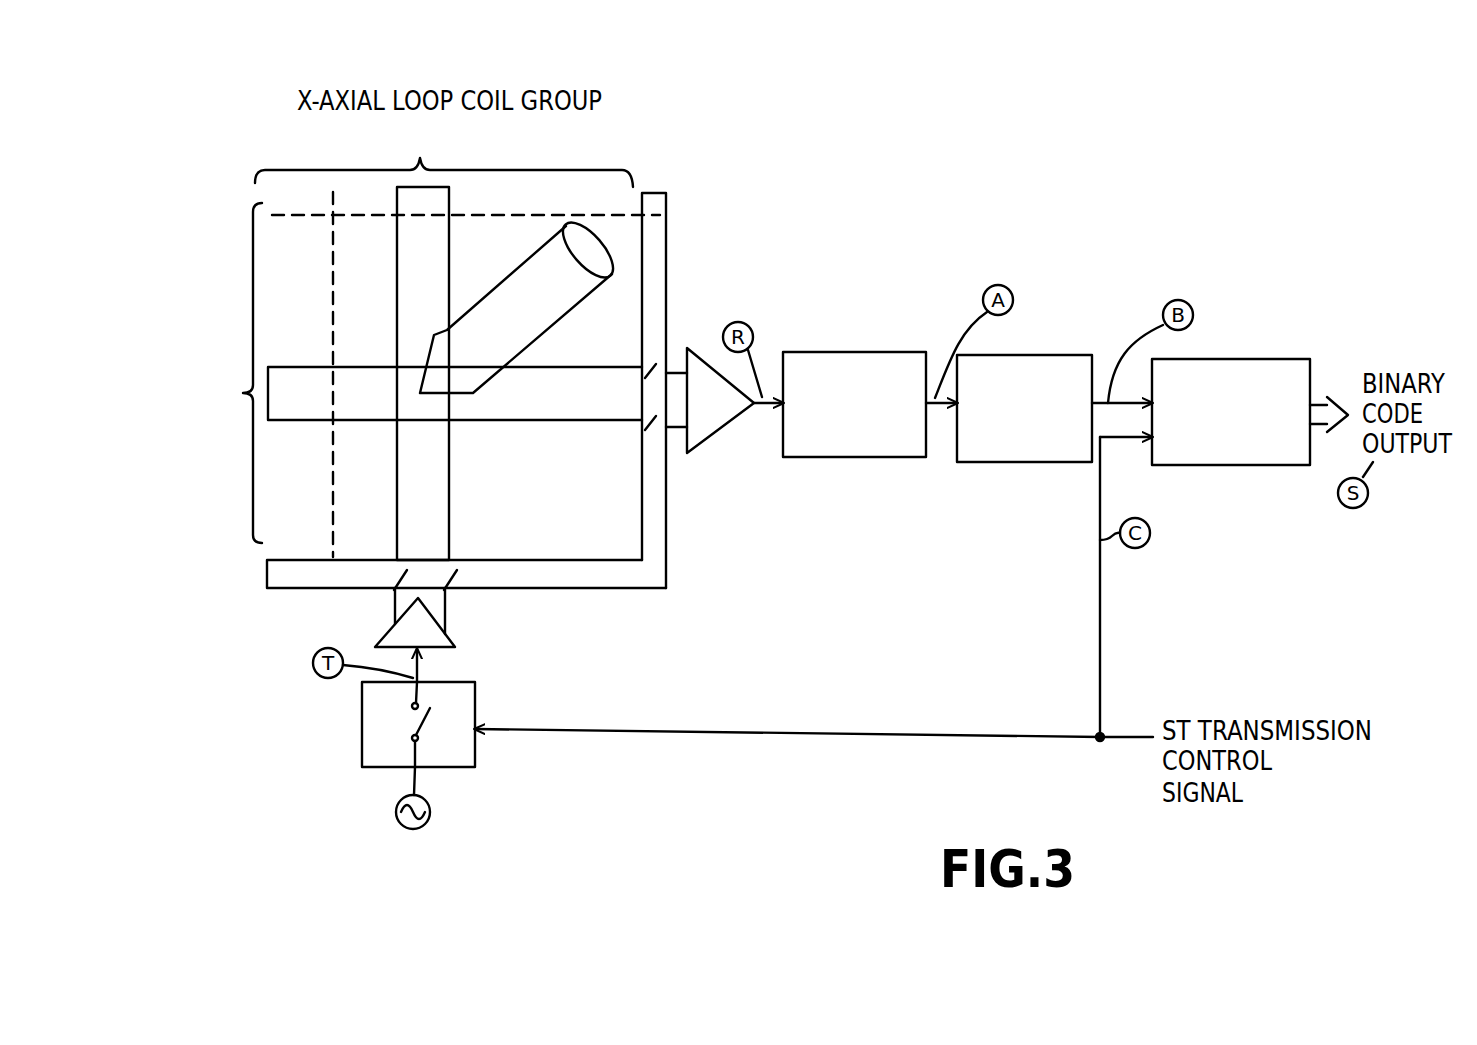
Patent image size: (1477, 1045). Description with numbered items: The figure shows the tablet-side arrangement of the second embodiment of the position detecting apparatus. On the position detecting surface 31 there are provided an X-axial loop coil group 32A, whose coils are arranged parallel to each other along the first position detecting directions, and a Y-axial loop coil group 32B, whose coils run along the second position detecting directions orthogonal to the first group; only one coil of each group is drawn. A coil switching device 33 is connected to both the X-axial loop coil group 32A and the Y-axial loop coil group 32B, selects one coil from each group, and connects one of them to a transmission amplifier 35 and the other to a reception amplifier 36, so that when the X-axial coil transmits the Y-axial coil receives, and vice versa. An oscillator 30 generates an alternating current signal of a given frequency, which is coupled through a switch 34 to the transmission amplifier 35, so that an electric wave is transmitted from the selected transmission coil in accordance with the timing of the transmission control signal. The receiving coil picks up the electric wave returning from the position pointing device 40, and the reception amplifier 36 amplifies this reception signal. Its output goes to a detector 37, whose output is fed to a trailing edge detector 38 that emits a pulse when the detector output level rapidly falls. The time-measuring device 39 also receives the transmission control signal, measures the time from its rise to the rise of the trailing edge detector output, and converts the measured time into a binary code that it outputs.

The oscillator 30 is at (509, 798).
The position detecting surface 31 is at (280, 520).
The X-axial loop coil group 32A is at (444, 343).
The Y-axial loop coil group 32B is at (381, 373).
The coil switching device 33 is at (668, 240).
The switch 34 is at (475, 700).
The transmission amplifier 35 is at (455, 643).
The reception amplifier 36 is at (712, 434).
The detector 37 is at (878, 352).
The trailing edge detector 38 is at (1030, 355).
The time-measuring device 39 is at (1242, 359).
The position pointing device 40 is at (530, 257).